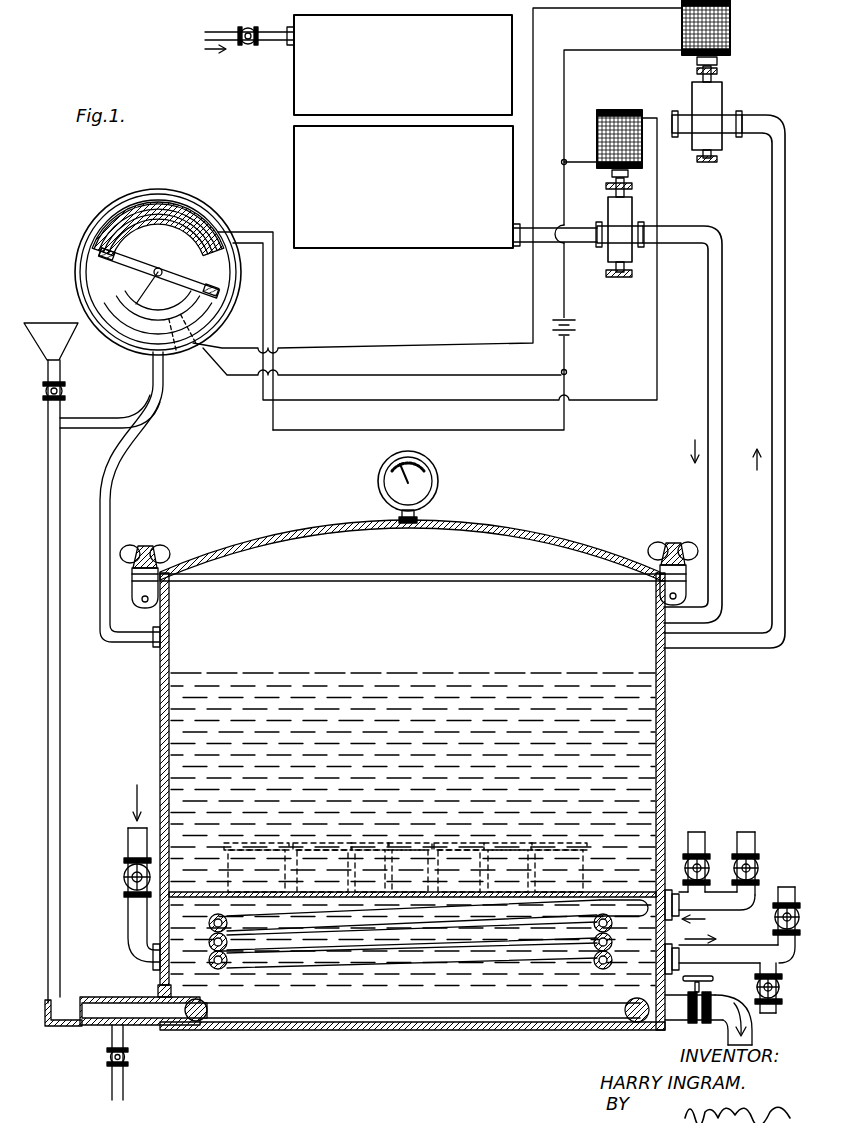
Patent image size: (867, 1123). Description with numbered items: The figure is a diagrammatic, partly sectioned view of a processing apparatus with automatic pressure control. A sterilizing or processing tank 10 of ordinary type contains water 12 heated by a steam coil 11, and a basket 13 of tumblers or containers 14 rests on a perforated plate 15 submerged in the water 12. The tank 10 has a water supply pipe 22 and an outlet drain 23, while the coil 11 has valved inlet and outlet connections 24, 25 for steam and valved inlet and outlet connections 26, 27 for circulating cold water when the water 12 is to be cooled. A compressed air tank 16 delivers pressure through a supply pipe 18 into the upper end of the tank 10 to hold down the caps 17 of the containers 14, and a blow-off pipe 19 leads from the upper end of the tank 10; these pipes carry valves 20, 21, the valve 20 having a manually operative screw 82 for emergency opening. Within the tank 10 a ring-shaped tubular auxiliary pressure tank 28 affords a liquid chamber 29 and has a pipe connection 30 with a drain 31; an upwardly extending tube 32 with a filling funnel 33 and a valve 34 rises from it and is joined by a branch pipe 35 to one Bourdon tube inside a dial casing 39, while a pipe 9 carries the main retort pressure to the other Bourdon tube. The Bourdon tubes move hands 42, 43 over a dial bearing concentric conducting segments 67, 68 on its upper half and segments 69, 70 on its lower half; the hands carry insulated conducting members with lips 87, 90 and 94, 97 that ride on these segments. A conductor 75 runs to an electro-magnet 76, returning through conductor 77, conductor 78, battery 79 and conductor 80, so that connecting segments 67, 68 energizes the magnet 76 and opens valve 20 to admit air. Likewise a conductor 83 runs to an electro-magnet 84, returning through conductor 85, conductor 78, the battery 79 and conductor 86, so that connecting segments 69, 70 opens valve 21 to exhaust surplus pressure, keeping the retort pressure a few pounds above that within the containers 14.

The pipe 9 is at (126, 466).
The sterilizing or processing tank 10 is at (666, 760).
The steam coil 11 is at (466, 945).
The water 12 is at (536, 778).
The basket 13 is at (238, 845).
The tumblers or containers 14 is at (405, 867).
The perforated plate 15 is at (257, 892).
The compressed air tank 16 is at (359, 131).
The caps 17 is at (350, 842).
The supply pipe 18 is at (706, 424).
The blow-off pipe 19 is at (772, 468).
The valve 20 is at (608, 211).
The valve 21 is at (722, 102).
The supply pipe 22 is at (128, 838).
The outlet drain 23 is at (728, 1033).
The valved inlet connection 24 is at (748, 832).
The valved outlet connection 25 is at (789, 887).
The valved inlet connection 26 is at (697, 832).
The valved outlet connection 27 is at (770, 1014).
The auxiliary pressure tank 28 is at (238, 1020).
The chamber 29 is at (186, 1027).
The pipe connection 30 is at (128, 1030).
The drain 31 is at (107, 1056).
The tube 32 is at (62, 745).
The filling funnel 33 is at (44, 336).
The valve 34 is at (66, 391).
The branch pipe 35 is at (120, 410).
The dial casing 39 is at (158, 271).
The hand 42 is at (157, 312).
The hand 43 is at (157, 260).
The conducting segment 67 is at (172, 222).
The conducting segment 68 is at (214, 238).
The conducting segment 69 is at (192, 352).
The conducting segment 70 is at (178, 355).
The conductor 75 is at (659, 188).
The electro-magnet 76 is at (597, 144).
The conductor 77 is at (566, 164).
The conductor 78 is at (566, 287).
The battery 79 is at (577, 327).
The conductor 80 is at (567, 425).
The manually operative screw 82 is at (619, 278).
The conductor 83 is at (597, 8).
The electro-magnet 84 is at (722, 32).
The conductor 85 is at (648, 50).
The conductor 86 is at (390, 376).
The lip 87 is at (98, 262).
The lip 90 is at (218, 292).
The lip 94 is at (108, 246).
The lip 97 is at (190, 292).